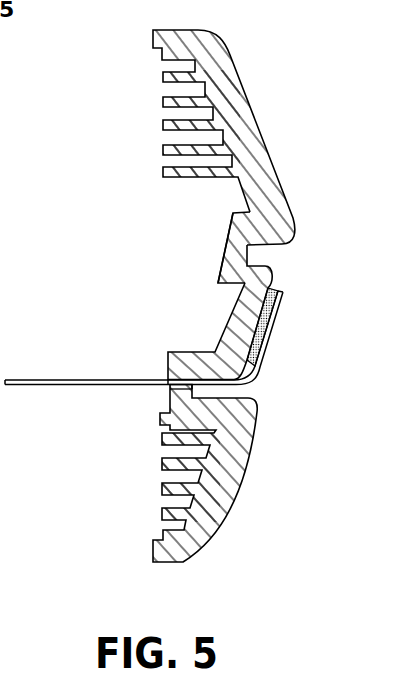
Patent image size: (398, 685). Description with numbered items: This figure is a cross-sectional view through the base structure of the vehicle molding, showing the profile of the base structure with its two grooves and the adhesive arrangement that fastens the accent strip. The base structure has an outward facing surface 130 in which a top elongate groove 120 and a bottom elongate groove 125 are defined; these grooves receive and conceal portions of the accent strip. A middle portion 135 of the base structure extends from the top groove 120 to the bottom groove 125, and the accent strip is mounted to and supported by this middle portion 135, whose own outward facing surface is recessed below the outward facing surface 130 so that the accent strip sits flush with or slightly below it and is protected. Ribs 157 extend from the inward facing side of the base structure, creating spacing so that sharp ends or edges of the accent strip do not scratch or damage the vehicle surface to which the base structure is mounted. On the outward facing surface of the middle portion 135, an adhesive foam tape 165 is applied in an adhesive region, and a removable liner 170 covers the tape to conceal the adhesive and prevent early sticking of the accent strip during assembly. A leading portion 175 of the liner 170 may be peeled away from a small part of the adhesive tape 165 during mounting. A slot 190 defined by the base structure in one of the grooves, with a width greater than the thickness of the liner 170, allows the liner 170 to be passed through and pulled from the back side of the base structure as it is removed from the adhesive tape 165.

The outward facing surface 130 is at (286, 168).
The ribs 157 is at (140, 108).
The top elongate groove 120 is at (284, 260).
The middle portion 135 is at (232, 313).
The removable liner 170 is at (258, 362).
The adhesive foam tape 165 is at (288, 304).
The leading portion 175 is at (76, 371).
The bottom elongate groove 125 is at (259, 391).
The slot 190 is at (148, 398).